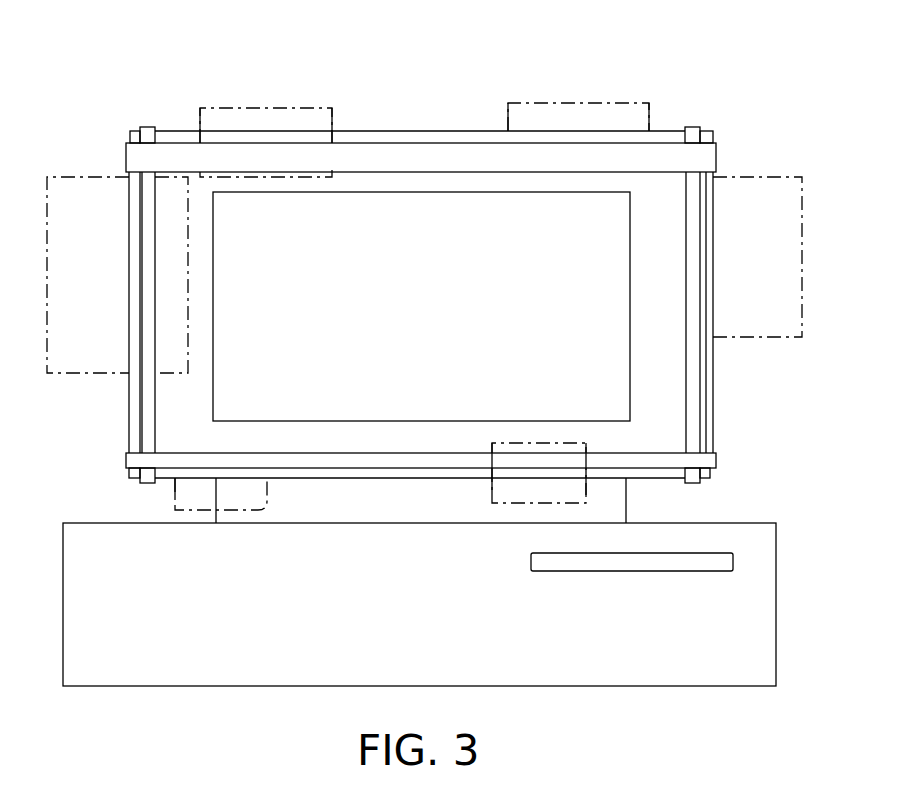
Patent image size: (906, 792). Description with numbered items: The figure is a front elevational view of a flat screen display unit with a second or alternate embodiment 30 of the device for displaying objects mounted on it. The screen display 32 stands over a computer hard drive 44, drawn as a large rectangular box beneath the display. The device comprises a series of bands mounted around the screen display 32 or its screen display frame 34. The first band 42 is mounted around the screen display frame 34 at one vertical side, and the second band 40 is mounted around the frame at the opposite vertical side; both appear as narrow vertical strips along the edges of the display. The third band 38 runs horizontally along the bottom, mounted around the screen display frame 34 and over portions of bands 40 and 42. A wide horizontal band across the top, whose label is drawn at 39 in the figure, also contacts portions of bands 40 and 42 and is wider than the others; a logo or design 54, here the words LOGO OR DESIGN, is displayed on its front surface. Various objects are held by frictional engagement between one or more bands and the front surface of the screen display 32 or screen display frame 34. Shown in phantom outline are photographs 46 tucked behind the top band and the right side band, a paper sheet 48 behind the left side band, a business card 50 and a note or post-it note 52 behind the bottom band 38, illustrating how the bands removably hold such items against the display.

The second or alternate embodiment 30 is at (706, 78).
The screen display 32 is at (225, 408).
The screen display frame 34 is at (705, 373).
The third band 38 is at (133, 456).
The top bar 39 is at (707, 155).
The second band 40 is at (147, 388).
The first band 42 is at (693, 410).
The computer hard drive 44 is at (755, 530).
The photographs 46 is at (232, 120).
The paper sheet 48 is at (86, 190).
The business card 50 is at (190, 497).
The note or post-it note 52 is at (584, 491).
The logo or design 54 is at (452, 148).